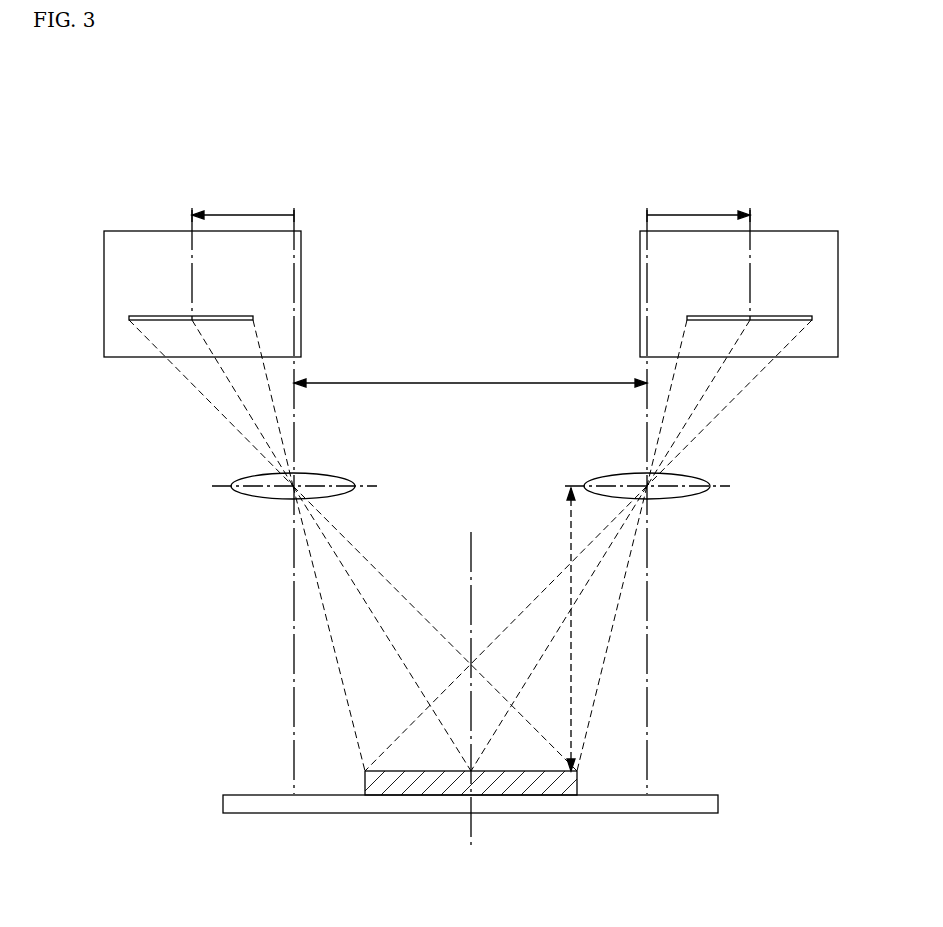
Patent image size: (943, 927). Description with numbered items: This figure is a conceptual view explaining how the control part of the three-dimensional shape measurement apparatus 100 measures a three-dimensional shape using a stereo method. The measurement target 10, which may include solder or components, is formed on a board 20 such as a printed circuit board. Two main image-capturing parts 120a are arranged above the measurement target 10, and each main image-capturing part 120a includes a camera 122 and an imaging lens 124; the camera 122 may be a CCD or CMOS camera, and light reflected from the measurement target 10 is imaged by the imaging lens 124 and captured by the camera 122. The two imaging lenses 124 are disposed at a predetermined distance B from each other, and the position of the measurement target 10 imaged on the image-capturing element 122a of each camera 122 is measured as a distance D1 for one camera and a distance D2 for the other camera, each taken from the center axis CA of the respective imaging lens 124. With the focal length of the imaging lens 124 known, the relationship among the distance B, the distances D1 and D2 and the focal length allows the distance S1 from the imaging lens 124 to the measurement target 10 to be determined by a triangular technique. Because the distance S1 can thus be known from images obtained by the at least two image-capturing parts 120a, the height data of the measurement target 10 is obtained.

The three-dimensional shape measurement apparatus 100 is at (412, 144).
The main image-capturing part 120a is at (107, 423).
The camera 122 is at (132, 360).
The image-capturing element 122a is at (155, 315).
The imaging lens 124 is at (233, 479).
The measurement target 10 is at (365, 786).
The board 20 is at (250, 805).
The distance imaged on the first image-capturing element D1 is at (243, 205).
The distance imaged on the second image-capturing element D2 is at (698, 205).
The predetermined distance between imaging lenses B is at (470, 371).
The distance from imaging lens to measurement target S1 is at (555, 629).
The center axis CA is at (648, 652).